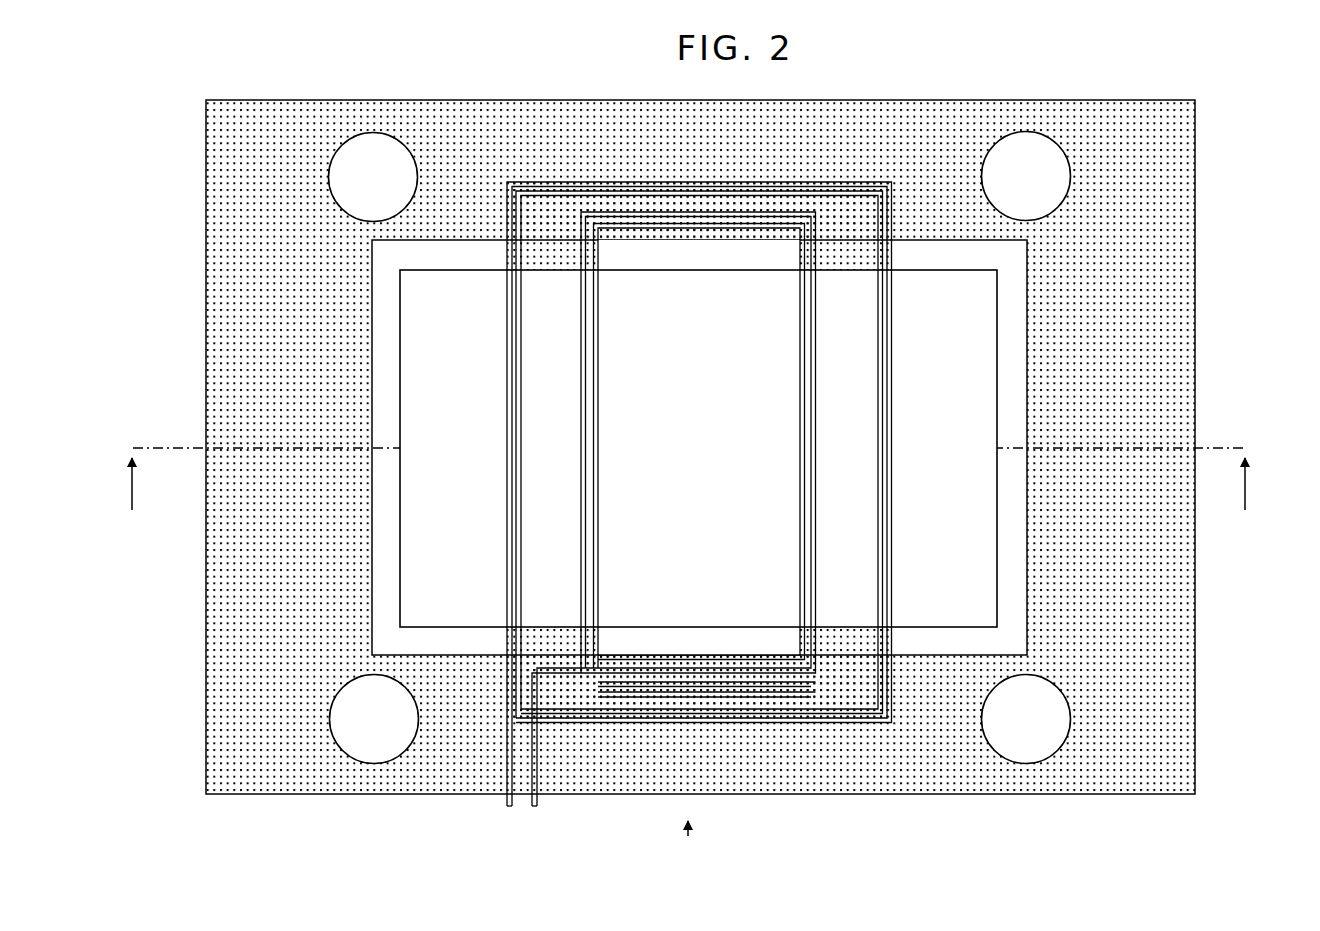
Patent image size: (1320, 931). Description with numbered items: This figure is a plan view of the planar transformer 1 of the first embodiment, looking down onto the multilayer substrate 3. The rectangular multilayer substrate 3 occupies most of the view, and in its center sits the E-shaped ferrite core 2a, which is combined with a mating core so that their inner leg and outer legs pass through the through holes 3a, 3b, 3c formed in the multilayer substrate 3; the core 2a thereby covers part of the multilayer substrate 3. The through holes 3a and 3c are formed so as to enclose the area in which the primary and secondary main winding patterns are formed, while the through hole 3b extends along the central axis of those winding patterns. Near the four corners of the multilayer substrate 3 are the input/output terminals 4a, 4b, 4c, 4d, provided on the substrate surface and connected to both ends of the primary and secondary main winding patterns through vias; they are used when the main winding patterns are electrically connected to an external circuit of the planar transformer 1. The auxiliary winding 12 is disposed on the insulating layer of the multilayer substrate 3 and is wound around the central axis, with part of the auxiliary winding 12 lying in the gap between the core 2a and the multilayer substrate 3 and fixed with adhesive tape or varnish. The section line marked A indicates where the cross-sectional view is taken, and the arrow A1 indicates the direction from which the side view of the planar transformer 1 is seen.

The planar transformer 1 is at (1280, 75).
The core 2a is at (400, 520).
The multilayer substrate 3 is at (1206, 300).
The through hole 3a is at (372, 305).
The through hole 3b is at (728, 228).
The through hole 3c is at (1028, 298).
The input/output terminal 4a is at (1057, 144).
The input/output terminal 4b is at (405, 146).
The input/output terminal 4c is at (397, 758).
The input/output terminal 4d is at (1047, 758).
The auxiliary winding 12 is at (555, 182).
The section line A- A is at (690, 498).
The arrow A1 is at (713, 827).